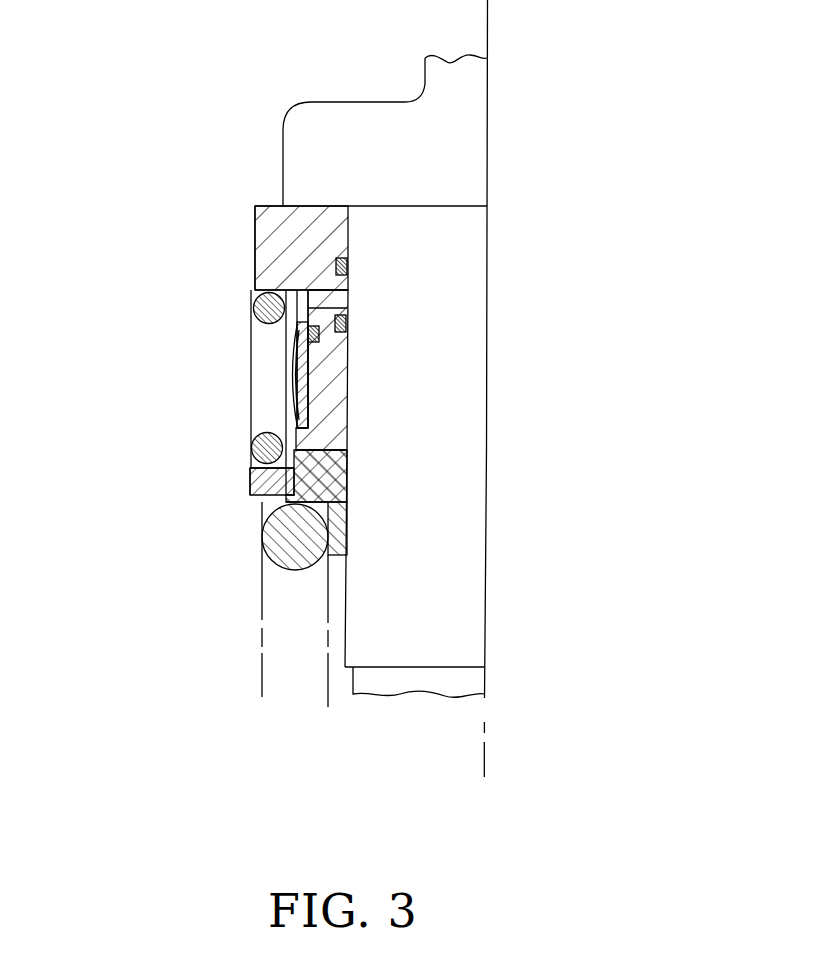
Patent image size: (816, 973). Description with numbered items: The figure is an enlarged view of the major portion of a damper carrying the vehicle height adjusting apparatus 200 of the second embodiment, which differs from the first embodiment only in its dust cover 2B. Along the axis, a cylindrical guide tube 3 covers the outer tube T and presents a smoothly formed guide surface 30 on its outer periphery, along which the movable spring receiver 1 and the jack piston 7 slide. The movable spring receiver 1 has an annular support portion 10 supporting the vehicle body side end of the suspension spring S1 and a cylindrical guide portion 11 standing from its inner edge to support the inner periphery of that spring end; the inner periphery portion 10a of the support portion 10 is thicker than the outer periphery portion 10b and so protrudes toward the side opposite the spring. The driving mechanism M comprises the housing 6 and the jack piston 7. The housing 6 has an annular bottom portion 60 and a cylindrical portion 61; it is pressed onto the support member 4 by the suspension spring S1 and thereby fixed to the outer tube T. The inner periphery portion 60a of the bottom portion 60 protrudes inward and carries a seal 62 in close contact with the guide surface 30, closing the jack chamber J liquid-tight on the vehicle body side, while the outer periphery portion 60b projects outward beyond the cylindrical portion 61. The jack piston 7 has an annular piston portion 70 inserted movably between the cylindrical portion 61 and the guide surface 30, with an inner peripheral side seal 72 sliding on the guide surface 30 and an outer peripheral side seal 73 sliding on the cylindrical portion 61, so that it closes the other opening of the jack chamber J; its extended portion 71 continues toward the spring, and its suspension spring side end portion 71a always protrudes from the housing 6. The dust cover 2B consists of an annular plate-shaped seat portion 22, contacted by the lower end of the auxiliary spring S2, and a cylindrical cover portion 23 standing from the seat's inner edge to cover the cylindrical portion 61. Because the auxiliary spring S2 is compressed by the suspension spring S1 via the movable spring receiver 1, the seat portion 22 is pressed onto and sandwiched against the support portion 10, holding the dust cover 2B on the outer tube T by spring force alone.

The vehicle height adjusting apparatus 200 is at (138, 163).
The support member 4 is at (357, 112).
The housing 6 is at (266, 194).
The bottom portion 60 is at (326, 200).
The inner periphery portion 60a is at (370, 206).
The outer periphery portion 60b is at (256, 242).
The seal 62 is at (347, 268).
The jack chamber J is at (350, 296).
The auxiliary spring S2 is at (256, 300).
The inner peripheral side seal 72 is at (350, 323).
The outer peripheral side seal 73 is at (257, 343).
The piston portion 70 is at (350, 343).
The cylindrical portion 61 is at (252, 358).
The jack piston 7 is at (354, 388).
The cover portion 23 is at (284, 377).
The extended portion 71 is at (340, 423).
The driving mechanism M is at (284, 411).
The guide surface 30 is at (466, 453).
The suspension spring side end portion 71a is at (340, 452).
The seat portion 22 is at (244, 481).
The inner periphery portion 10a is at (333, 484).
The dust cover 2B is at (244, 499).
The movable spring receiver 1 is at (356, 512).
The support portion 10 is at (246, 504).
The guide portion 11 is at (342, 535).
The outer periphery portion 10b is at (300, 556).
The suspension spring S1 is at (285, 566).
The guide tube 3 is at (336, 659).
The outer tube T is at (438, 690).